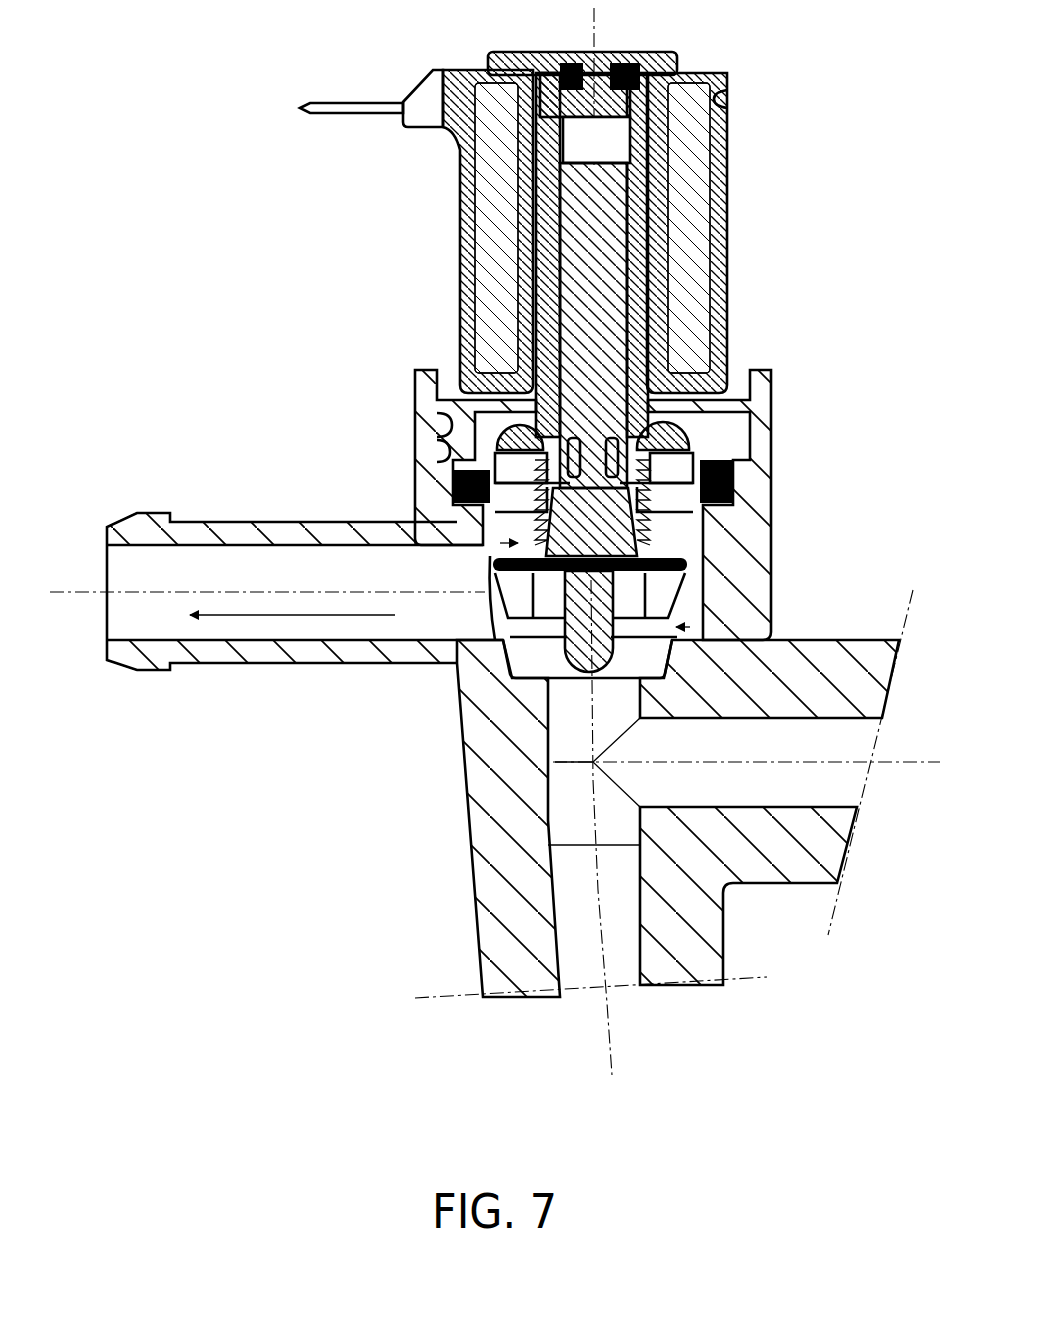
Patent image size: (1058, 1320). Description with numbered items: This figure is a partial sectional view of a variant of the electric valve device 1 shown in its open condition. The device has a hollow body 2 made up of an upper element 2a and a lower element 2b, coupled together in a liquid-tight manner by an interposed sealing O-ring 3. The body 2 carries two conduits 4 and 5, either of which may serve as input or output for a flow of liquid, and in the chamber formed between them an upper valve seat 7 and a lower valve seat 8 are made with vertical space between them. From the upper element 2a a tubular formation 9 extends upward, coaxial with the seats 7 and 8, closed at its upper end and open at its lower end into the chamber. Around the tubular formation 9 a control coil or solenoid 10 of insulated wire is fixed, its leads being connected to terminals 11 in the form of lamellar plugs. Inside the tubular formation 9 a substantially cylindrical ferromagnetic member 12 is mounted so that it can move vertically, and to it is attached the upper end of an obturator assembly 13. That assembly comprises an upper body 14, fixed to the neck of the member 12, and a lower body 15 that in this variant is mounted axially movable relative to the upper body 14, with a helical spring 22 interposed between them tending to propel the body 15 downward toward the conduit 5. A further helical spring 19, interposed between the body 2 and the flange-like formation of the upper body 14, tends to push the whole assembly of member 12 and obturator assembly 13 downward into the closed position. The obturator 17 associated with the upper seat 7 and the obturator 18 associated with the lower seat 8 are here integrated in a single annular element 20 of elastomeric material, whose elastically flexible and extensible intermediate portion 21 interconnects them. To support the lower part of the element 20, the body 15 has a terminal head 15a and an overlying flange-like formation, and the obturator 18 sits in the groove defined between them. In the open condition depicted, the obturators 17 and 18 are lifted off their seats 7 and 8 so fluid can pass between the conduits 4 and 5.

The electric valve device 1 is at (806, 386).
The hollow body 2 is at (406, 388).
The upper element 2a is at (492, 420).
The lower element 2b is at (737, 570).
The sealing O-ring 3 is at (413, 485).
The conduit 4 is at (240, 558).
The conduit 5 is at (797, 805).
The upper valve seat 7 is at (460, 640).
The lower valve seat 8 is at (583, 690).
The tubular formation 9 is at (530, 150).
The control coil or solenoid 10 is at (690, 228).
The terminal 11 is at (342, 100).
The ferromagnetic member 12 is at (607, 323).
The obturator assembly 13 is at (470, 568).
The upper body 14 is at (700, 527).
The second body 15 is at (700, 597).
The terminal formation 15a is at (615, 690).
The sealing ring member 17 is at (495, 583).
The second sealing element 18 is at (550, 700).
The helical spring 19 is at (477, 523).
The annular element 20 is at (690, 627).
The intermediate portion 21 is at (530, 660).
The helical spring 22 is at (700, 540).